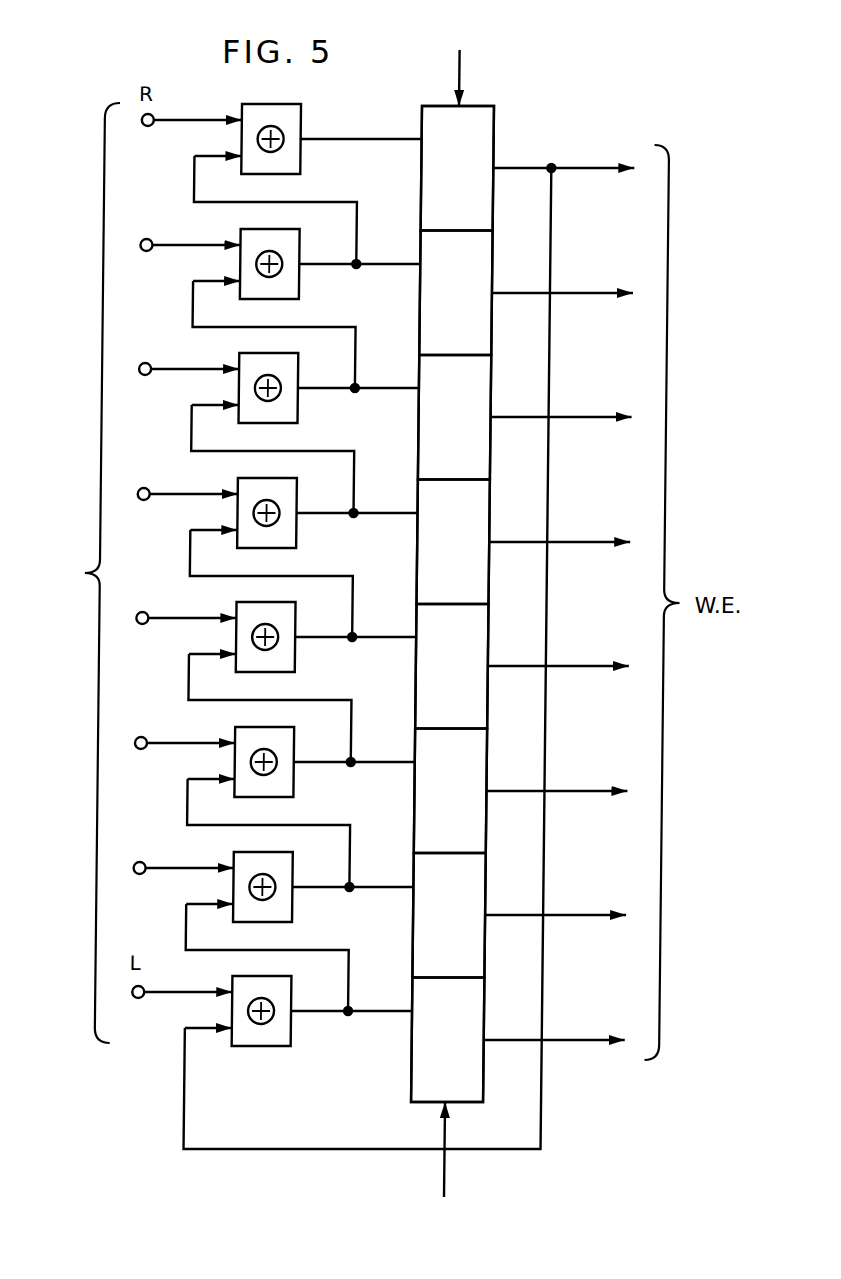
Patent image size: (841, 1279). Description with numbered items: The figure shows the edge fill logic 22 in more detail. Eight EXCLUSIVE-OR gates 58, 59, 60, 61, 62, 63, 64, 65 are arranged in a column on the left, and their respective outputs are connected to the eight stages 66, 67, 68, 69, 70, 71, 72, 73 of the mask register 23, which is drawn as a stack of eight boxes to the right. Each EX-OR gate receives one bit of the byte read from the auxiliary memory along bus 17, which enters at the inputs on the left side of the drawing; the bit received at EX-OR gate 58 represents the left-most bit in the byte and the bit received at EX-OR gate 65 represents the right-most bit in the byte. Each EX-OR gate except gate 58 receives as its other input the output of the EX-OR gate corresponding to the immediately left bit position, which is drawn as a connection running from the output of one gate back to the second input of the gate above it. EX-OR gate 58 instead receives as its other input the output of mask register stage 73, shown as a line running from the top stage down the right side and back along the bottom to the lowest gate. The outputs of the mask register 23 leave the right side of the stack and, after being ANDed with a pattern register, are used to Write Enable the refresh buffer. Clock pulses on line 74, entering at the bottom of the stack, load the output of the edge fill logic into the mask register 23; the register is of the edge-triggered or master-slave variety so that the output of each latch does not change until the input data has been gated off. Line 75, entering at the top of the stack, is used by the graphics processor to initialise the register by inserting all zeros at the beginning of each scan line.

The bus 17 is at (79, 573).
The edge fill logic 22 is at (167, 1063).
The mask register 23 is at (494, 138).
The EXCLUSIVE-OR gate 58 is at (284, 1027).
The EXCLUSIVE-OR gate 59 is at (286, 902).
The EXCLUSIVE-OR gate 60 is at (286, 777).
The EXCLUSIVE-OR gate 61 is at (286, 652).
The EXCLUSIVE-OR gate 62 is at (286, 528).
The EXCLUSIVE-OR gate 63 is at (286, 403).
The EXCLUSIVE-OR gate 64 is at (286, 279).
The EXCLUSIVE-OR gate 65 is at (286, 154).
The mask register stage 66 is at (471, 1057).
The mask register stage 67 is at (471, 932).
The mask register stage 68 is at (471, 808).
The mask register stage 69 is at (471, 683).
The mask register stage 70 is at (471, 559).
The mask register stage 71 is at (471, 434).
The mask register stage 72 is at (471, 310).
The mask register stage 73 is at (471, 185).
The clock line 74 is at (457, 1168).
The initialise line 75 is at (459, 64).